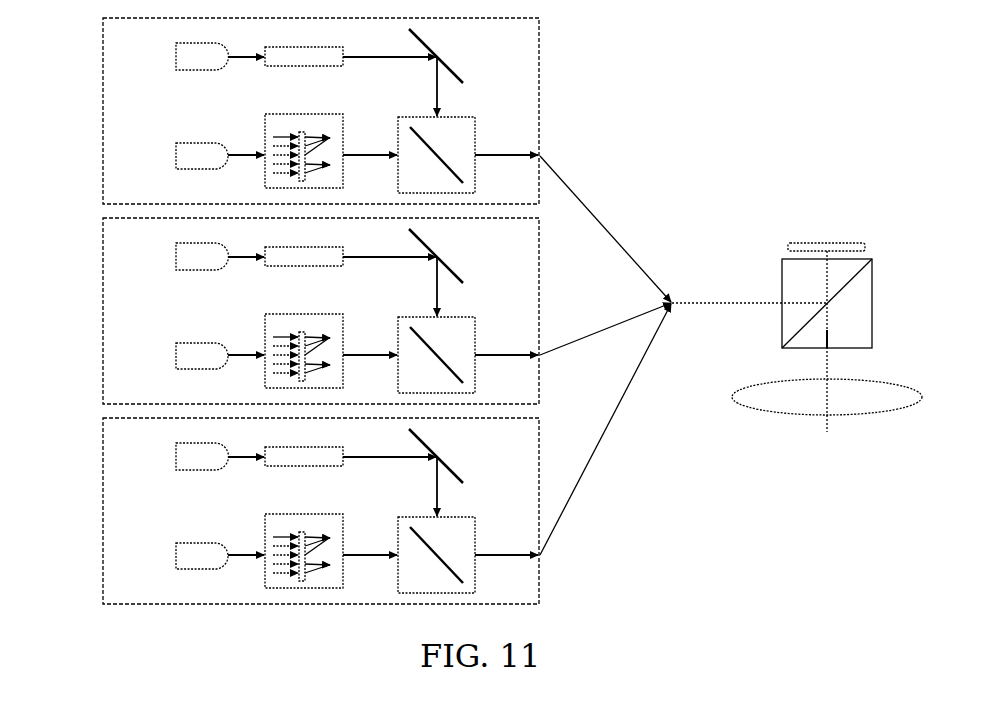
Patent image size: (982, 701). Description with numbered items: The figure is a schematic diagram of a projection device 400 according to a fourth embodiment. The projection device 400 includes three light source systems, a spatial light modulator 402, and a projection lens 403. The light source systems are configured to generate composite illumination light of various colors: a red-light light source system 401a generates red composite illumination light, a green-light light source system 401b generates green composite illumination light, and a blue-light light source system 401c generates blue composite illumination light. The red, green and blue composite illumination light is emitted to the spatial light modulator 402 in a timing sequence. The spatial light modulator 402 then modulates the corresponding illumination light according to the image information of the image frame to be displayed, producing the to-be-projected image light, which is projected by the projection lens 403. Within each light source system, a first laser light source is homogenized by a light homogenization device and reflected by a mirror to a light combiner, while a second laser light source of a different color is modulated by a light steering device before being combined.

The projection device 400 is at (651, 104).
The red-light light source system 401a is at (101, 115).
The green-light light source system 401b is at (101, 318).
The blue-light light source system 401c is at (101, 521).
The spatial light modulator 402 is at (810, 242).
The projection lens 403 is at (758, 382).